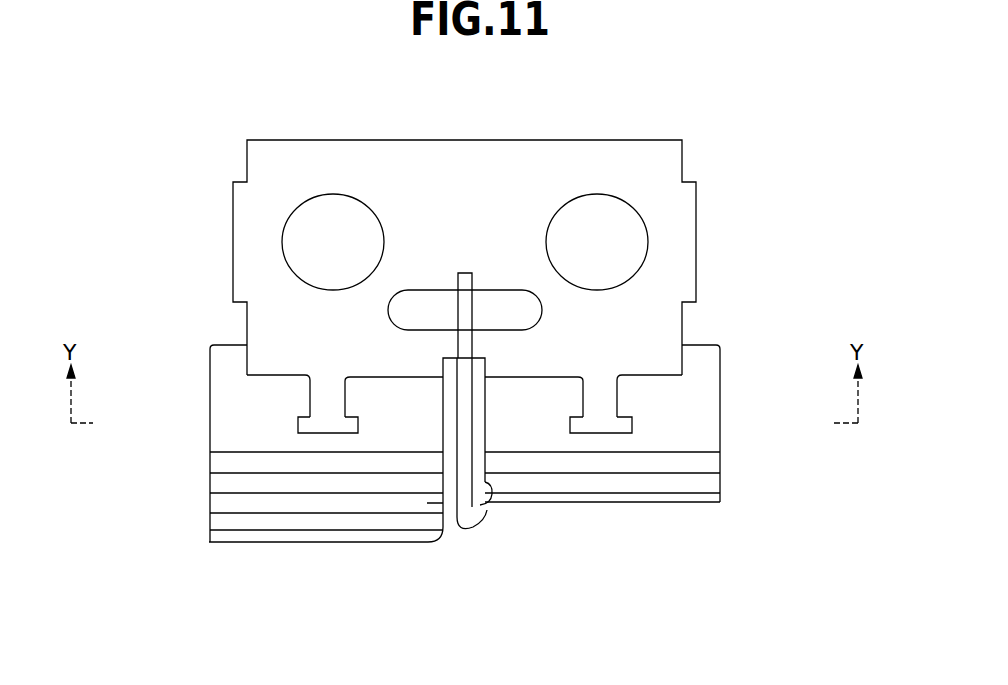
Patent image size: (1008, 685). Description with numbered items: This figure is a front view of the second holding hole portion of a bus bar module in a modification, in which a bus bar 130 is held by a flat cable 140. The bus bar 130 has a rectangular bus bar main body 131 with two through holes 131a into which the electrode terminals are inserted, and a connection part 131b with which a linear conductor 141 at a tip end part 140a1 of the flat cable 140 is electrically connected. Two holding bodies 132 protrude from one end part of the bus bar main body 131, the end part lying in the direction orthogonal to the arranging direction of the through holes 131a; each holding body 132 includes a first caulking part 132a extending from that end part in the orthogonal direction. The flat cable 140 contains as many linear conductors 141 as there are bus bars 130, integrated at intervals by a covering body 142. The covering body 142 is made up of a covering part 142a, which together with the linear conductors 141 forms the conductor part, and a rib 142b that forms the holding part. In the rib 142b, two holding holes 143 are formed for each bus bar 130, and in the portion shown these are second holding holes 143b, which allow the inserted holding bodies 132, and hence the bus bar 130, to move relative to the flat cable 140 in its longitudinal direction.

The bus bar 130 is at (651, 106).
The bus bar main body 131 is at (233, 153).
The through hole 131a is at (325, 220).
The connection part 131b is at (505, 297).
The holding body 132 is at (462, 418).
The first caulking part 132a is at (797, 353).
The flat cable 140 is at (348, 446).
The tip end part 140a1 is at (490, 497).
The linear conductor 141 is at (458, 300).
The covering body 142 is at (498, 405).
The covering part 142a is at (683, 500).
The rib 142b is at (702, 355).
The holding hole 143 is at (463, 447).
The second holding hole 143b is at (297, 418).